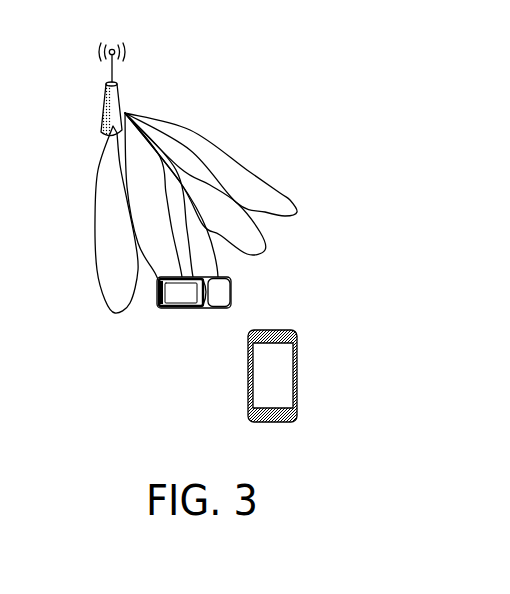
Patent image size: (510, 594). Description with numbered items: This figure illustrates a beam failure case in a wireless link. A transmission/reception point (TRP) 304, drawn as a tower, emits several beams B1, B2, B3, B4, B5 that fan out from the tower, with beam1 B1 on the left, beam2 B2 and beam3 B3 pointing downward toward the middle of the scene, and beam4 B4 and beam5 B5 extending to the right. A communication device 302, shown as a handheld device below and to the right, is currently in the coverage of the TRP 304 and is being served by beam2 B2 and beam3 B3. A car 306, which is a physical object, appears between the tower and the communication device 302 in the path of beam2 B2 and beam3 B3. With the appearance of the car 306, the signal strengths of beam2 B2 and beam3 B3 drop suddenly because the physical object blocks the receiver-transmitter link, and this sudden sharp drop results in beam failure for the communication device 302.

The communication device 302 is at (299, 368).
The transmission/reception point (TRP) 304 is at (122, 90).
The car (physical object) 306 is at (232, 292).
The beam1 B1 is at (116, 219).
The beam2 B2 is at (153, 206).
The beam3 B3 is at (171, 208).
The beam4 B4 is at (195, 184).
The beam5 B5 is at (211, 164).